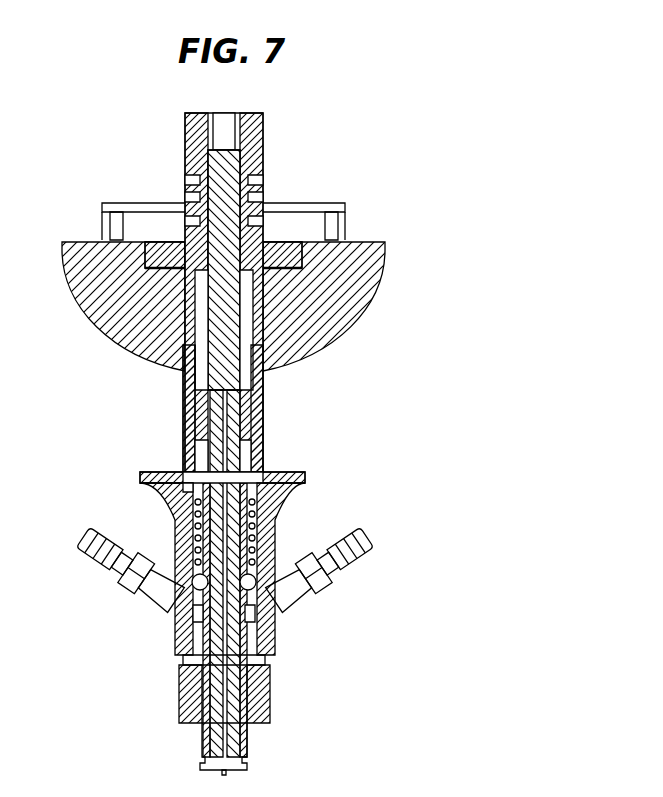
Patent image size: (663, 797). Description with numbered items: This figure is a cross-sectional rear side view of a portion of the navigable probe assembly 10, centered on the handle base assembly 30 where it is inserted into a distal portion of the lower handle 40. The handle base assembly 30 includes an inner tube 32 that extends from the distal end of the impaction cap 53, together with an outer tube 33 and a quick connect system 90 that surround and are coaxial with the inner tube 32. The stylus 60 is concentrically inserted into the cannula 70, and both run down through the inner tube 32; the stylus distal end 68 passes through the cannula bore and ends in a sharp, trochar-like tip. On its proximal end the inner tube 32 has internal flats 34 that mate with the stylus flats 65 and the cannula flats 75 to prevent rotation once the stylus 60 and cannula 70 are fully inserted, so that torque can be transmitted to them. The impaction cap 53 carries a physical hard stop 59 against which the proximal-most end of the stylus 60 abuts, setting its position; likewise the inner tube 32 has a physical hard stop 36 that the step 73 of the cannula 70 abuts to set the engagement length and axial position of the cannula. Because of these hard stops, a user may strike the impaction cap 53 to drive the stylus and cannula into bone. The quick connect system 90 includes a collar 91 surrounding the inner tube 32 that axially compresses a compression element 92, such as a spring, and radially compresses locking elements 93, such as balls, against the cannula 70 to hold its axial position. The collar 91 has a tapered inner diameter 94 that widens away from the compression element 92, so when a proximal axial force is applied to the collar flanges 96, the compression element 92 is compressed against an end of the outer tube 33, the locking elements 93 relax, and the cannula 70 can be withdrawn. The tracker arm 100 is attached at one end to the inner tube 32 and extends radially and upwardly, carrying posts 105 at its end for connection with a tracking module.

The navigable probe assembly 10 is at (421, 107).
The handle base assembly 30 is at (290, 386).
The inner tube 32 is at (200, 414).
The outer tube 33 is at (192, 368).
The internal flats 34 is at (198, 440).
The physical hard stop 36 is at (247, 450).
The lower handle 40 is at (368, 298).
The impaction cap 53 is at (248, 114).
The physical hard stop 59 is at (240, 152).
The stylus 60 is at (198, 187).
The stylus flats 65 is at (185, 335).
The distal end 68 is at (228, 733).
The cannula 70 is at (256, 460).
The step 73 is at (245, 460).
The cannula flats 75 is at (240, 400).
The quick connect system 90 is at (320, 488).
The collar 91 is at (273, 522).
The compression element 92 is at (183, 530).
The locking element 93 is at (268, 590).
The inner diameter 94 is at (170, 605).
The collar flanges 96 is at (147, 480).
The tracker arm 100 is at (288, 694).
The posts 105 is at (127, 560).